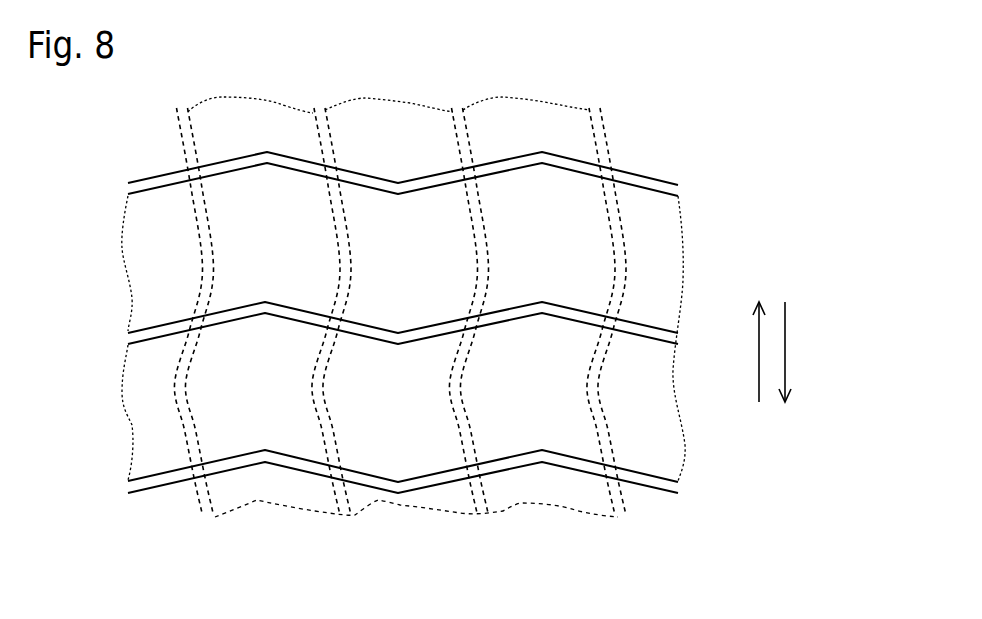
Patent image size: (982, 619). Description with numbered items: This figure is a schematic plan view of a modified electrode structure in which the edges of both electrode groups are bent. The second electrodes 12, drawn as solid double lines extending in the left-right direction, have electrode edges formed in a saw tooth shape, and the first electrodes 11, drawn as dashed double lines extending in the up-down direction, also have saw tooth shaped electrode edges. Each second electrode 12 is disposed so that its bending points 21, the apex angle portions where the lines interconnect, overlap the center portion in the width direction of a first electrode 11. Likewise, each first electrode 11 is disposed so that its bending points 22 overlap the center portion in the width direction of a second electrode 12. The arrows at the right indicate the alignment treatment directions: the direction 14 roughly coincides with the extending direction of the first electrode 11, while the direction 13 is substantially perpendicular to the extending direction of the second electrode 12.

The first electrode 11 is at (257, 500).
The second electrode 12 is at (130, 250).
The direction of alignment treatment 13 is at (746, 352).
The direction of alignment treatment 14 is at (798, 352).
The bending point 21 is at (400, 182).
The bending point 22 is at (493, 243).